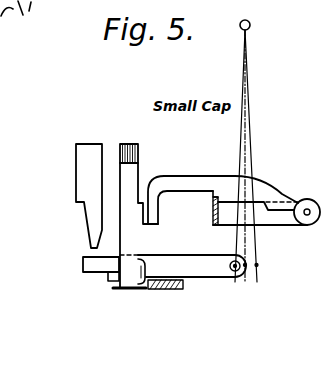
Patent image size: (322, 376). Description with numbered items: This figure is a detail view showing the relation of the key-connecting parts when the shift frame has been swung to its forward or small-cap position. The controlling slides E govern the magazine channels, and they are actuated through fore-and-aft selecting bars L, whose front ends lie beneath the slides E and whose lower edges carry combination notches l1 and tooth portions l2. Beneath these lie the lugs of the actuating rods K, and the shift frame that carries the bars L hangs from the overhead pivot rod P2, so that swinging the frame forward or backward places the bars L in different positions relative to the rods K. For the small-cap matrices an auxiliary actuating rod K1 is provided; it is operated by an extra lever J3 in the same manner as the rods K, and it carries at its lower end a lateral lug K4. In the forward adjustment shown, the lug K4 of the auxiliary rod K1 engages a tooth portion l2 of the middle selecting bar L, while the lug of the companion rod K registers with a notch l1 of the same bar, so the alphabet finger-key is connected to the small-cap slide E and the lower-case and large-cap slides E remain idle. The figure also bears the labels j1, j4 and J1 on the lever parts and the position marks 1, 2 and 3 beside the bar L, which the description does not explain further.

The controlling slide E is at (77, 179).
The actuating rod K is at (135, 153).
The auxiliary actuating rod K1 is at (137, 178).
The lateral lug K4 is at (149, 285).
The notch l1 is at (144, 266).
The tooth portion l2 is at (148, 258).
The selecting bar L is at (205, 257).
The extra lever J3 is at (189, 177).
The arm step j4 is at (214, 194).
The joint strip j1 is at (211, 205).
The arm end with pivot J1 is at (276, 222).
The overhead pivot rod P2 is at (250, 19).
The position line 1 is at (238, 166).
The position line 2 is at (245, 166).
The position line 3 is at (252, 166).